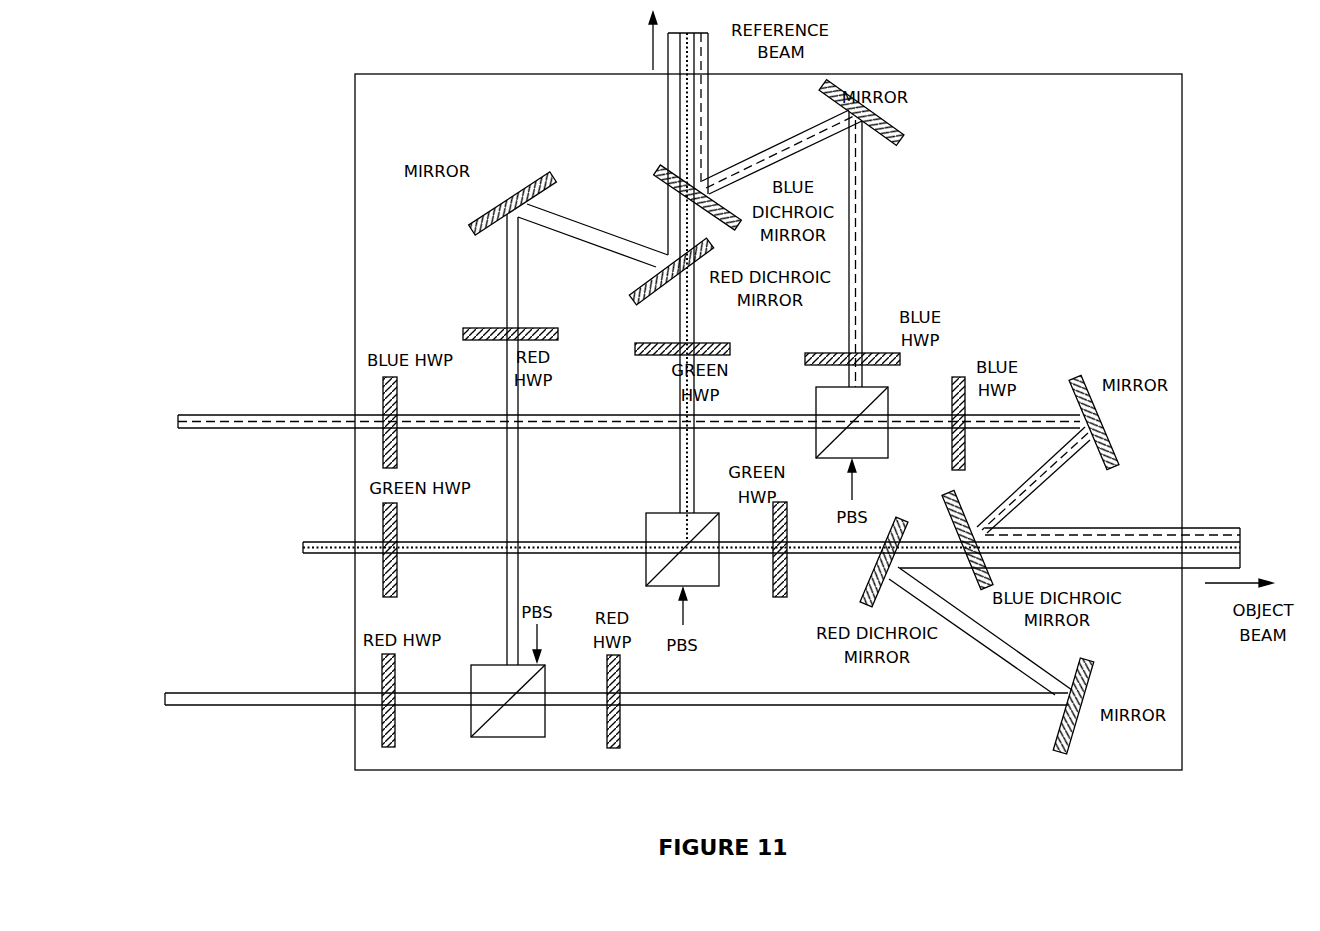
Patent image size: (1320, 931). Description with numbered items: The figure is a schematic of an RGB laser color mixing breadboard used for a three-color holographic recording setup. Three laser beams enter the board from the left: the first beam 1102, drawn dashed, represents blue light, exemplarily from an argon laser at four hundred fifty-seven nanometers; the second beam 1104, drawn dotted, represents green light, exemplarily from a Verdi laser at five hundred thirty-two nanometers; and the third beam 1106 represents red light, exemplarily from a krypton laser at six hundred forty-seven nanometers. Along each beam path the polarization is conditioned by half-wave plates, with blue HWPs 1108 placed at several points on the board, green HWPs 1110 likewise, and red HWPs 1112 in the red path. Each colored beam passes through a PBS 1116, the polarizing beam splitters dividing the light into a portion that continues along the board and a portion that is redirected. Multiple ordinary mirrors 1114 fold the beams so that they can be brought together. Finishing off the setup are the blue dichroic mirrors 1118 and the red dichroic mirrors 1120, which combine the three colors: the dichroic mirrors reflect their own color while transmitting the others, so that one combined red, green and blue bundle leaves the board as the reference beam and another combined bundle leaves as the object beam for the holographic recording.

The first beam 1102 is at (327, 413).
The second beam 1104 is at (343, 542).
The third beam 1106 is at (308, 692).
The blue half-wave plate 1108 is at (397, 393).
The green half-wave plate 1110 is at (397, 515).
The red half-wave plate 1112 is at (463, 328).
The mirror 1114 is at (537, 177).
The polarizing beam splitter 1116 is at (815, 433).
The blue dichroic mirror 1118 is at (660, 170).
The red dichroic mirror 1120 is at (633, 297).